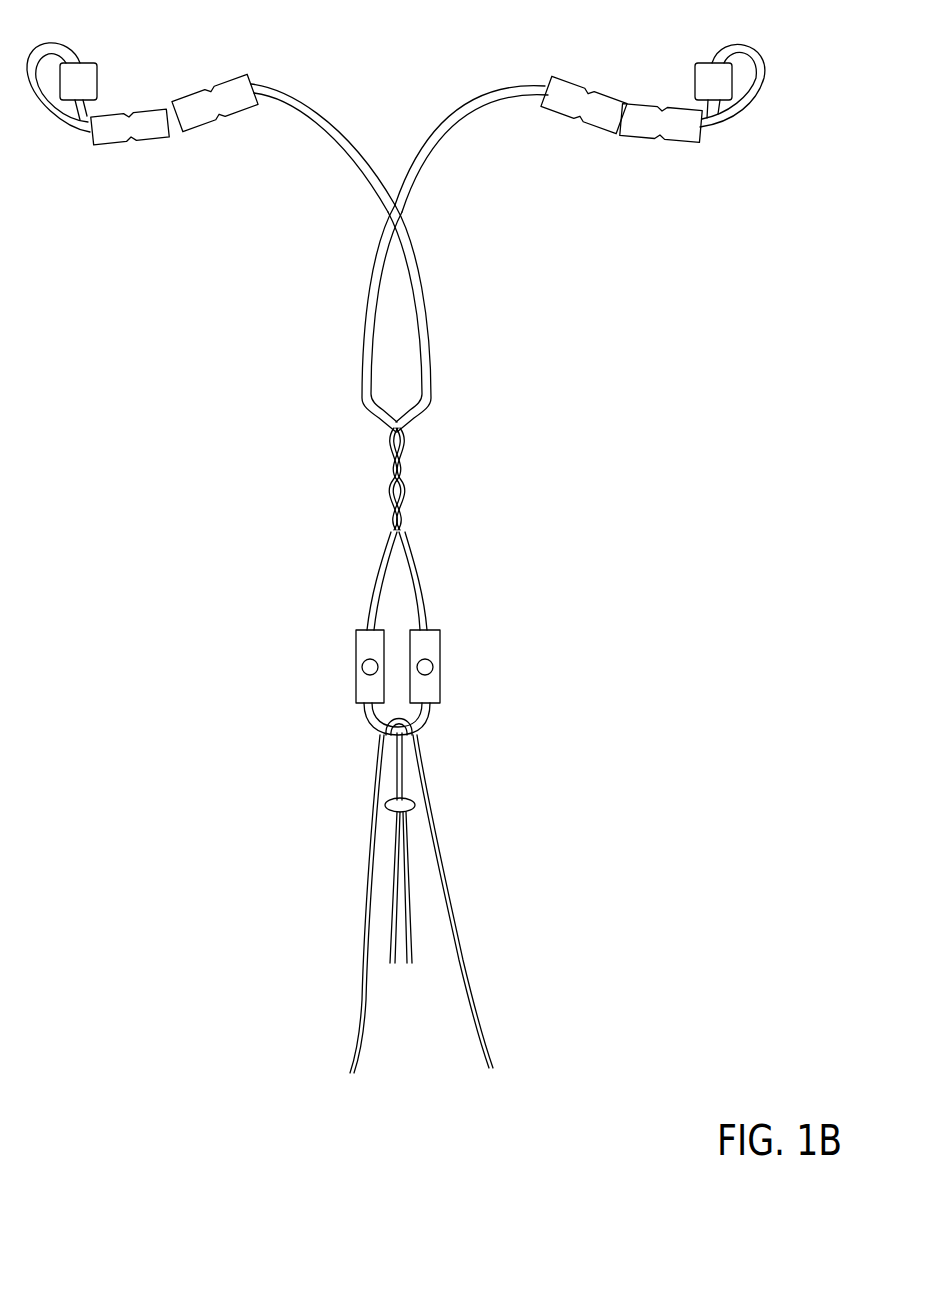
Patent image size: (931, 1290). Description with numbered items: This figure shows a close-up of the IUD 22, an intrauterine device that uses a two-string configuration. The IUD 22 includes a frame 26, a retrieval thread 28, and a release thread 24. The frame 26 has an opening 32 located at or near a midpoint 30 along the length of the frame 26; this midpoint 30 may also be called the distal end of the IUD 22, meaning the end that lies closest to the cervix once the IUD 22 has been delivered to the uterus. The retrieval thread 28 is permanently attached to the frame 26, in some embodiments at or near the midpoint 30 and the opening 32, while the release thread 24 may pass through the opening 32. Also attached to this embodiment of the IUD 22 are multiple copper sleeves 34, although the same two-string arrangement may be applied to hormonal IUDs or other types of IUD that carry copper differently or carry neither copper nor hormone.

The IUD 22 is at (708, 283).
The release thread 24 is at (450, 905).
The frame 26 is at (440, 357).
The retrieval thread 28 is at (408, 917).
The midpoint 30 is at (416, 747).
The opening 32 is at (400, 592).
The copper sleeves 34 is at (193, 95).